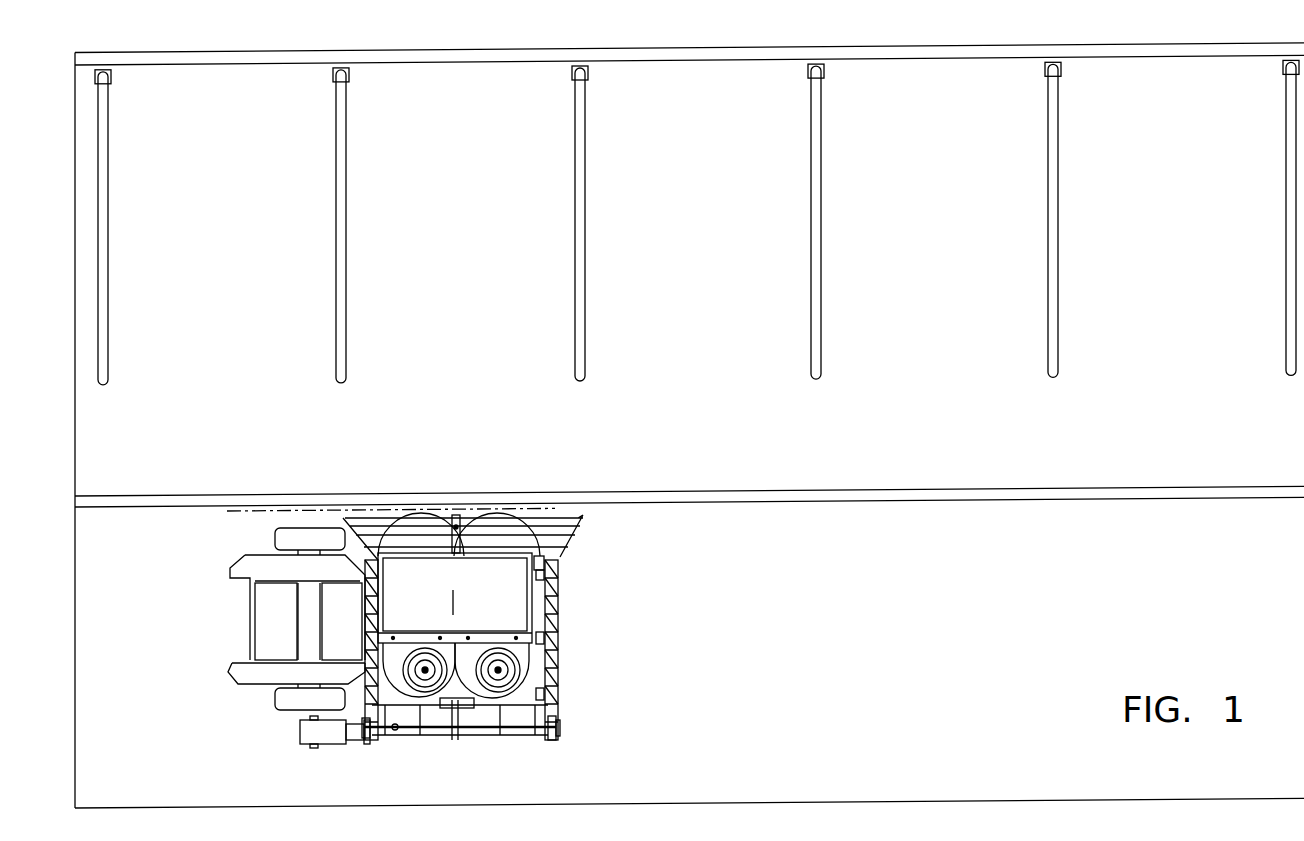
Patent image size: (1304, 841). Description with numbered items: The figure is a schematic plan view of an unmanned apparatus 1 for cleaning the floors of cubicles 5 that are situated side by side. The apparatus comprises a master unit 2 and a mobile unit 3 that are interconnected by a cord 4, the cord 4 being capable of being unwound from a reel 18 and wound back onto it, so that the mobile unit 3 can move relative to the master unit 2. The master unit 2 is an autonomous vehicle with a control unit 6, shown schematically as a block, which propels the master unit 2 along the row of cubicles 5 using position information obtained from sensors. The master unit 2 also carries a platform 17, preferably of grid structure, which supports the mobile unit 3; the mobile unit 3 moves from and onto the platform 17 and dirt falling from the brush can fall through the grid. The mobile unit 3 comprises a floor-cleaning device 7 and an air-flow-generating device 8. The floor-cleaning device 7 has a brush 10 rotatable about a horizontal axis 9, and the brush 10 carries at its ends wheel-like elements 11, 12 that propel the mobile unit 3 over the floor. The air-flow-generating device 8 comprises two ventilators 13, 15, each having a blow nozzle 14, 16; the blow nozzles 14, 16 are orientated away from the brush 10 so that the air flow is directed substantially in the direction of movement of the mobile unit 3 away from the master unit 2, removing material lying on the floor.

The unmanned apparatus 1 is at (252, 534).
The master unit 2 is at (557, 666).
The mobile unit 3 is at (553, 645).
The cord 4 is at (482, 690).
The cubicles 5 is at (210, 215).
The control unit 6 is at (268, 623).
The floor-cleaning device 7 is at (356, 698).
The air-flow-generating device 8 is at (523, 704).
The horizontal axis 9 is at (555, 696).
The brush 10 is at (560, 721).
The wheel-like element 11 is at (556, 649).
The wheel-like element 12 is at (322, 675).
The ventilator 13 is at (492, 712).
The blow nozzle 14 is at (462, 521).
The ventilator 15 is at (432, 705).
The blow nozzle 16 is at (447, 513).
The platform 17 is at (552, 578).
The reel 18 is at (453, 750).